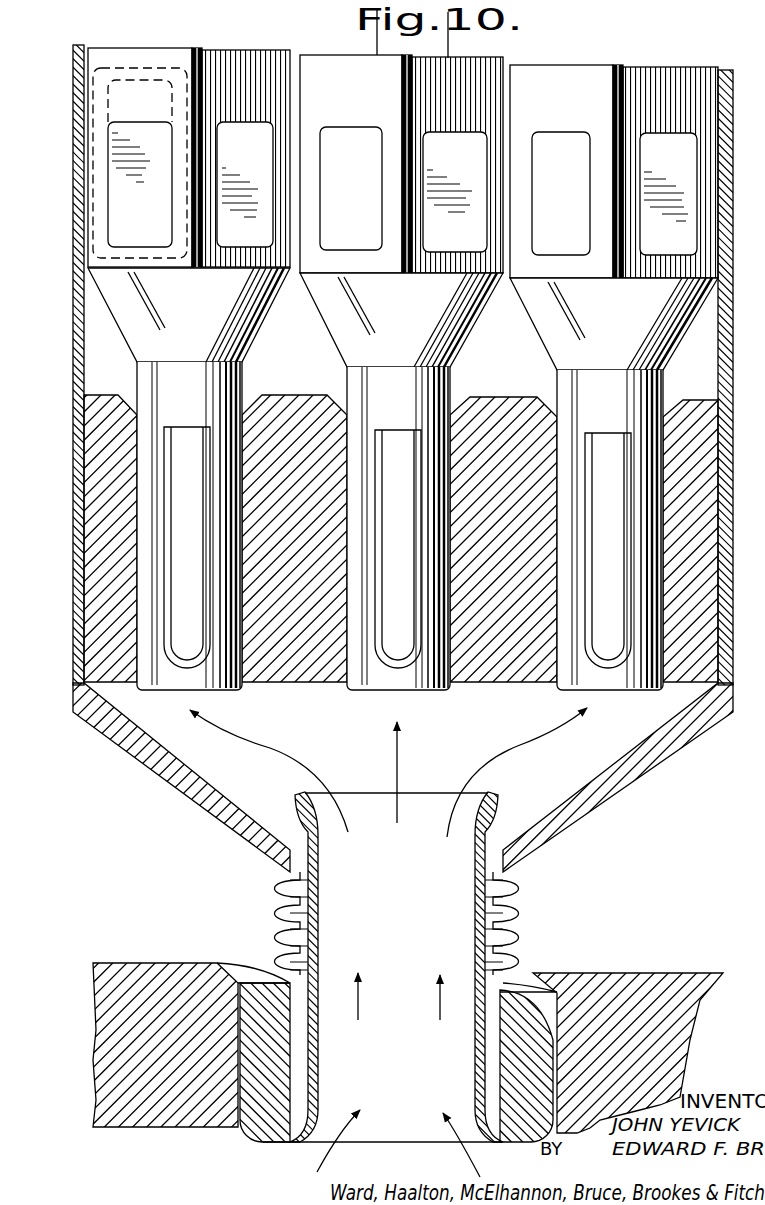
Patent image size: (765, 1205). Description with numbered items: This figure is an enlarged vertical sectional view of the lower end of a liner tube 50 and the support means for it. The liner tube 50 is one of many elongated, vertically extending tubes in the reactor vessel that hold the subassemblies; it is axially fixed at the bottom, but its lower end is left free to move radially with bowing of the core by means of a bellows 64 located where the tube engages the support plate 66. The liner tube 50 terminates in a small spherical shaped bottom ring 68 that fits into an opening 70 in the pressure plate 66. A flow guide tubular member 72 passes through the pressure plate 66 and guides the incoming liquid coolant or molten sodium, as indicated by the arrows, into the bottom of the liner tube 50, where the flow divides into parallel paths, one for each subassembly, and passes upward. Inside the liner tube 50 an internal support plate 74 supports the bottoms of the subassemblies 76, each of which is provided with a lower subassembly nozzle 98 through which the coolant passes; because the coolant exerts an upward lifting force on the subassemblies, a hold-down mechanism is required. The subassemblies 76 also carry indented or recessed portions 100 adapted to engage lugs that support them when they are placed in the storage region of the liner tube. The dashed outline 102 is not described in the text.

The liner tube 50 is at (66, 432).
The bellows 64 is at (267, 935).
The support plate 66 is at (120, 1115).
The spherical shaped bottom ring 68 is at (272, 1118).
The opening 70 is at (240, 1130).
The flow guide tubular member 72 is at (319, 939).
The internal support plate 74 is at (97, 558).
The subassembly 76 is at (274, 53).
The lower subassembly nozzle 98 is at (340, 392).
The recessed portion 100 is at (263, 155).
The dashed outline 102 is at (166, 66).